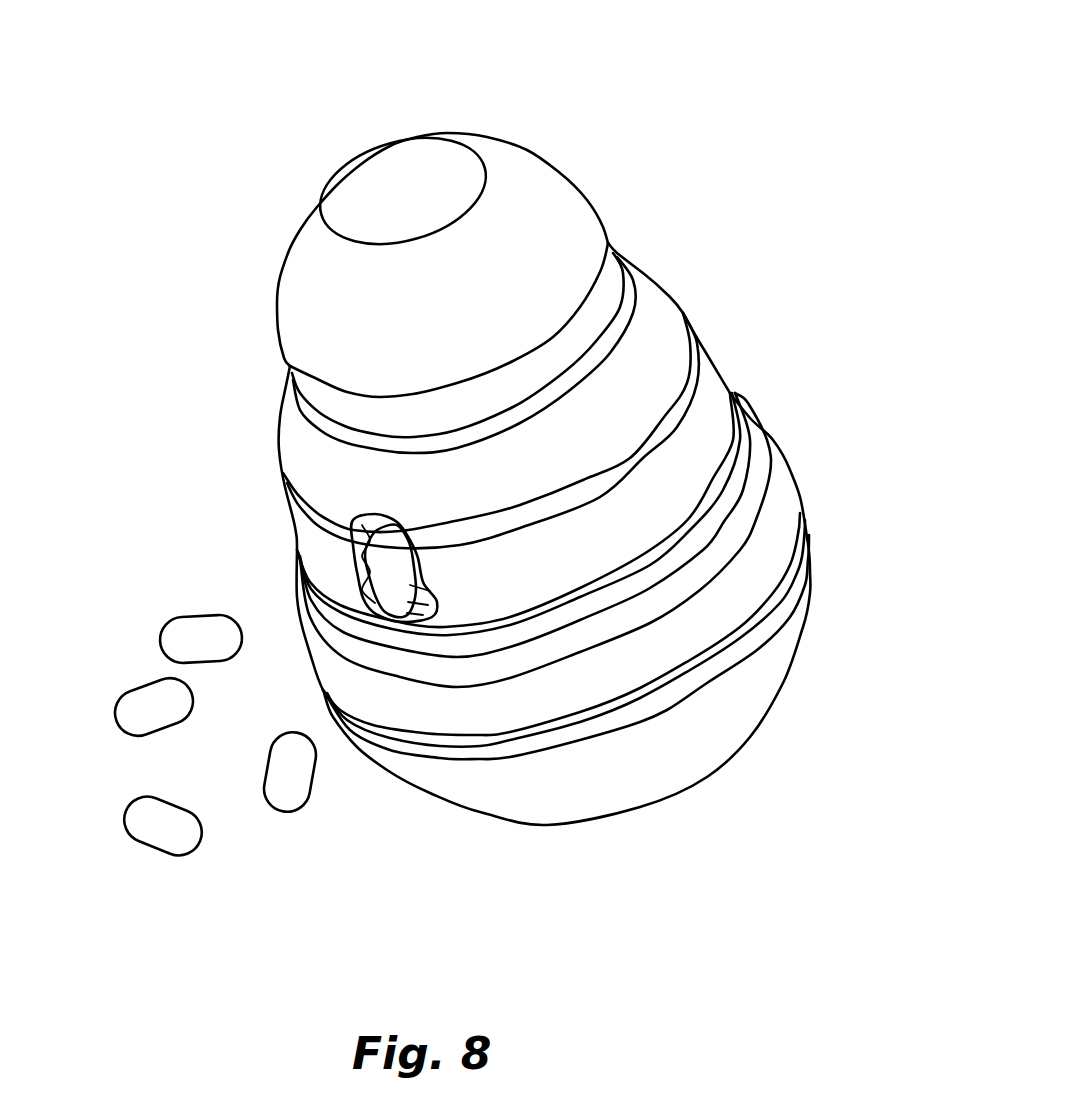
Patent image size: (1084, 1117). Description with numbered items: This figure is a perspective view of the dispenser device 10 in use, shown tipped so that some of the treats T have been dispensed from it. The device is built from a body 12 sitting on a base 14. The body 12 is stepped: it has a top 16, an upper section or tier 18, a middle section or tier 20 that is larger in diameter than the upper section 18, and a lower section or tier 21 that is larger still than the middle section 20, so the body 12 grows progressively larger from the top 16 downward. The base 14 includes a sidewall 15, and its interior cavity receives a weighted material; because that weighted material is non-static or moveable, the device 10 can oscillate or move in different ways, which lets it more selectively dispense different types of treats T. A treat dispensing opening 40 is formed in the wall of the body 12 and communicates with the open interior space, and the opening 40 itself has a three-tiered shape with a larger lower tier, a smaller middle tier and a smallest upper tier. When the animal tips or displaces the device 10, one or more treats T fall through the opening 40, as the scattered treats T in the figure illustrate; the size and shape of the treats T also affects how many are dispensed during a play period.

The dispenser device 10 is at (676, 118).
The body 12 is at (752, 313).
The base 14 is at (856, 632).
The sidewall 15 is at (588, 784).
The top 16 is at (396, 204).
The upper section or tier 18 is at (430, 316).
The middle section or tier 20 is at (521, 483).
The lower section or tier 21 is at (571, 562).
The treat dispensing opening 40 is at (377, 530).
The treats T is at (160, 640).